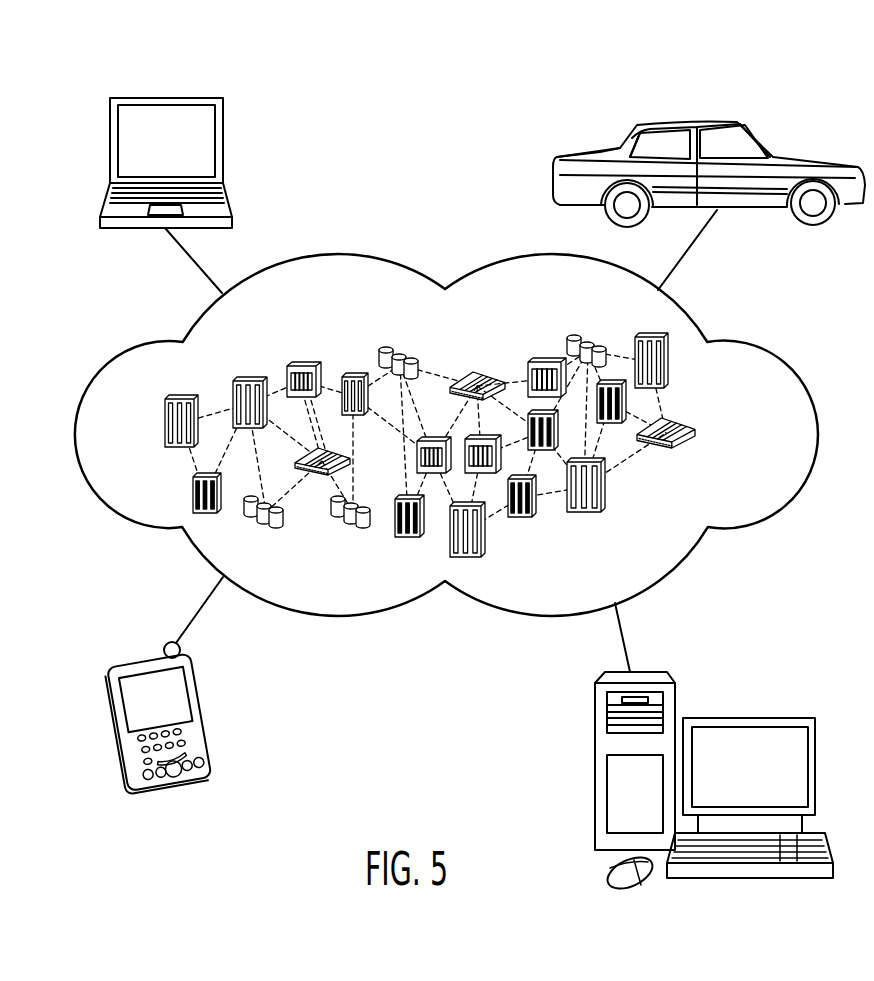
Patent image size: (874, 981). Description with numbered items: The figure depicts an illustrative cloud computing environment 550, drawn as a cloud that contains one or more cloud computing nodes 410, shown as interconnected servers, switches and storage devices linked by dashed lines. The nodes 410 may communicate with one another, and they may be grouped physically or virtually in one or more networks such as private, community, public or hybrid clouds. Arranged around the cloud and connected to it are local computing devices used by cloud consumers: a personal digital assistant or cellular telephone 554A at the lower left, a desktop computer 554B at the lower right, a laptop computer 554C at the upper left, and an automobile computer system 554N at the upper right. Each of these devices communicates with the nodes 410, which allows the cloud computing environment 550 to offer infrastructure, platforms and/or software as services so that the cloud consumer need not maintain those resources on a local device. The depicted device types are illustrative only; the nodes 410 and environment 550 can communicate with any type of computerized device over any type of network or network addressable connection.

The laptop computer 554C is at (166, 97).
The automobile computer system 554N is at (690, 120).
The personal digital assistant (PDA) or cellular telephone 554A is at (147, 657).
The desktop computer 554B is at (750, 717).
The cloud computing environment 550 is at (762, 343).
The cloud computing nodes 410 is at (701, 432).